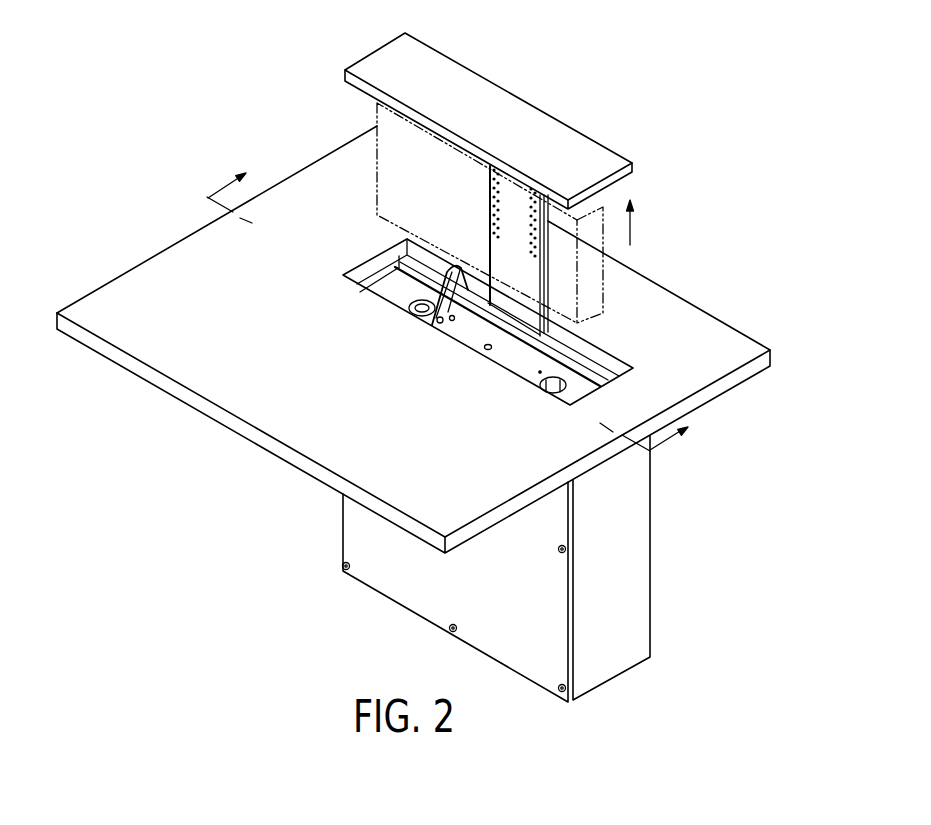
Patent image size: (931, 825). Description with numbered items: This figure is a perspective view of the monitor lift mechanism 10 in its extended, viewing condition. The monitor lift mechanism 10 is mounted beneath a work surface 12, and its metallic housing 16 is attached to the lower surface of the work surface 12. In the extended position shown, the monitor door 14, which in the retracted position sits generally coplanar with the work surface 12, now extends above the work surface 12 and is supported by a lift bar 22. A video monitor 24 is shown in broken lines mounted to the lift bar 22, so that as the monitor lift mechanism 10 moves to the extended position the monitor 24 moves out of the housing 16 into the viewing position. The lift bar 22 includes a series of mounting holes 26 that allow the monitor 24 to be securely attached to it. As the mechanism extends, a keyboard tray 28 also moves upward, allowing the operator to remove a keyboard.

The monitor lift mechanism 10 is at (426, 367).
The work surface 12 is at (112, 303).
The monitor door 14 is at (538, 118).
The housing 16 is at (637, 637).
The lift bar 22 is at (516, 273).
The video monitor 24 is at (592, 203).
The mounting holes 26 is at (487, 222).
The keyboard tray 28 is at (385, 288).